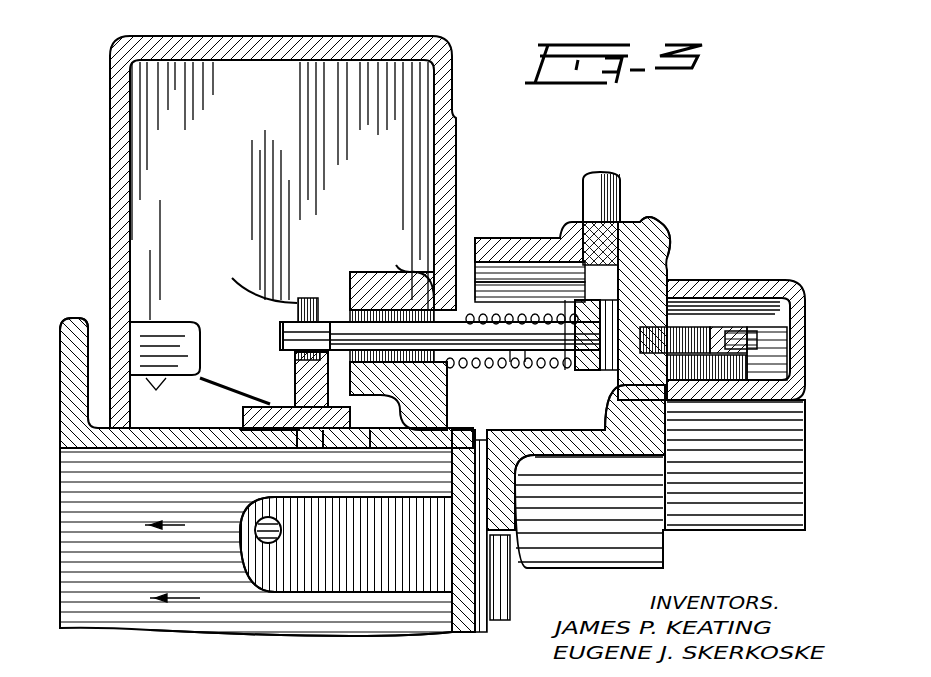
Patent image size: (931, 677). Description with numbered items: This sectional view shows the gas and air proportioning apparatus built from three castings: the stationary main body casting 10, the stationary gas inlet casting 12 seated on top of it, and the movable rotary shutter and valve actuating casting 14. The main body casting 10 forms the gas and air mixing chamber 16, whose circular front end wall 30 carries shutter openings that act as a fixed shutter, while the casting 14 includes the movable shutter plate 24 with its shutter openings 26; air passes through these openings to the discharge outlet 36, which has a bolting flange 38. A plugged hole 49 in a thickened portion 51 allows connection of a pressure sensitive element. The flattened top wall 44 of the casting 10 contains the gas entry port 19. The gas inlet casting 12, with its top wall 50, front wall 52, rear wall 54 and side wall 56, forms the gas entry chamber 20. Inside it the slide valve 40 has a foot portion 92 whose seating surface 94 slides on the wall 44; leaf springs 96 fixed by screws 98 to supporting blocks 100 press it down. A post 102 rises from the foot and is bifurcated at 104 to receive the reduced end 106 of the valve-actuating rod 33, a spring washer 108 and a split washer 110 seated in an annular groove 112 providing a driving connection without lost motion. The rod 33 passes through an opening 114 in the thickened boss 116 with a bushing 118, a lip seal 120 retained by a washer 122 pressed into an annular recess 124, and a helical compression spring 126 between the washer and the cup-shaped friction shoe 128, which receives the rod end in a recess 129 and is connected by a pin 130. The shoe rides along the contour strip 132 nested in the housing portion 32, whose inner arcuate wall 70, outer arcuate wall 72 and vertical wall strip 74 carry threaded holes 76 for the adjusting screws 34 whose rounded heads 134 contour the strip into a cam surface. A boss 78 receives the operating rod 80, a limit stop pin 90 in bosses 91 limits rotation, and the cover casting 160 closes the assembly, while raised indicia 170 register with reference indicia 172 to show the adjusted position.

The main body casting 10 is at (262, 640).
The gas inlet casting 12 is at (340, 40).
The rotary shutter and valve actuating casting 14 is at (676, 240).
The gas and air mixing chamber 16 is at (168, 592).
The gas entry port 19 is at (345, 445).
The gas entry chamber 20 is at (224, 196).
The shutter plate 24 is at (505, 560).
The shutter openings 26 is at (498, 605).
The front end wall 30 is at (462, 550).
The housing portion 32 is at (690, 258).
The valve-actuating rod 33 is at (440, 354).
The adjusting screws 34 is at (645, 395).
The air and gas discharge outlet 36 is at (76, 512).
The bolting flange 38 is at (72, 330).
The slide valve 40 is at (265, 430).
The top wall 44 is at (192, 428).
The plugged hole 49 is at (262, 528).
The top wall 50 is at (256, 38).
The thickened portion 51 is at (250, 563).
The front wall 52 is at (443, 92).
The rear wall 54 is at (116, 96).
The side wall 56 is at (200, 88).
The inner arcuate wall 70 is at (592, 440).
The outer arcuate wall 72 is at (548, 240).
The vertical wall strip 74 is at (665, 400).
The threaded holes 76 is at (720, 330).
The boss 78 is at (640, 240).
The operating rod 80 is at (612, 195).
The limit stop pin 90 is at (490, 302).
The bosses 91 is at (500, 286).
The foot portion 92 is at (320, 445).
The seating surface 94 is at (358, 445).
The leaf springs 96 is at (225, 390).
The screws 98 is at (154, 390).
The supporting blocks 100 is at (145, 335).
The post 102 is at (310, 372).
The bifurcated upper end 104 is at (300, 300).
The reduced end 106 is at (300, 347).
The spring washer 108 is at (356, 316).
The split washer 110 is at (300, 318).
The annular groove 112 is at (288, 333).
The opening 114 is at (372, 305).
The thickened boss 116 is at (400, 272).
The bushing 118 is at (400, 430).
The lip seal 120 is at (456, 290).
The washer 122 is at (478, 238).
The annular recess 124 is at (506, 368).
The helical compression spring 126 is at (540, 362).
The friction shoe 128 is at (656, 282).
The recess 129 is at (655, 258).
The pin 130 is at (540, 386).
The contour strip 132 is at (650, 312).
The rounded heads 134 is at (592, 352).
The cover casting 160 is at (800, 280).
The raised indicia 170 is at (535, 238).
The reference indicia 172 is at (456, 146).